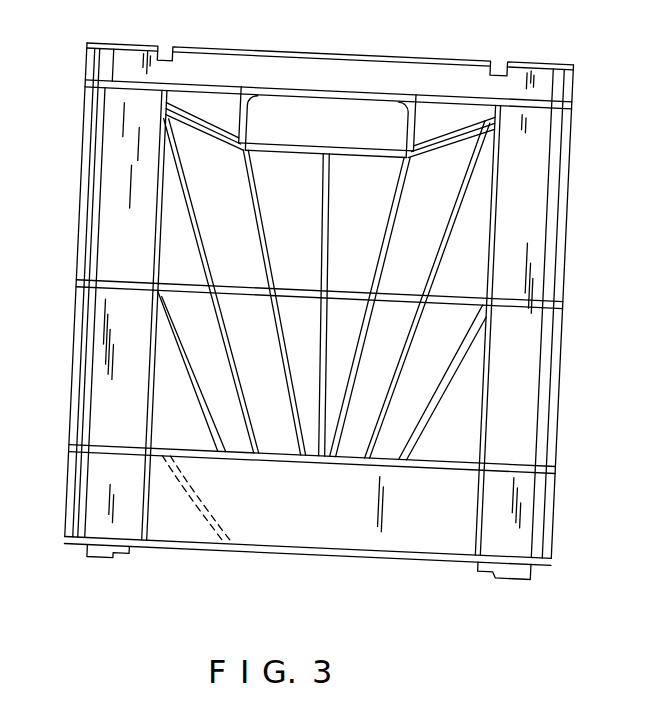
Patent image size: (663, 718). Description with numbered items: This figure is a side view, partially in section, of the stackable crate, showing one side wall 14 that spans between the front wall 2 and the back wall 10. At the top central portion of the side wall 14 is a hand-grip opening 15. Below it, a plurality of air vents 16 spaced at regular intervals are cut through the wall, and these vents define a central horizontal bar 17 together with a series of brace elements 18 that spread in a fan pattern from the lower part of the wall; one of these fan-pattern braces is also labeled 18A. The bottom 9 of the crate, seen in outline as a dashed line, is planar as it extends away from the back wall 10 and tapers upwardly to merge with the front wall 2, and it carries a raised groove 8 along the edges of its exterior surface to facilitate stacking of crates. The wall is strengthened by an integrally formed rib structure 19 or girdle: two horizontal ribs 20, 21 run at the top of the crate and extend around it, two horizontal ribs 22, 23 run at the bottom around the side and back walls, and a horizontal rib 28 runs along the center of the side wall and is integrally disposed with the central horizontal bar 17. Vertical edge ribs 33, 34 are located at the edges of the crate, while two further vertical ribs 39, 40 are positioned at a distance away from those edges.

The front wall 2 is at (80, 247).
The raised groove 8 is at (110, 553).
The bottom 9 is at (212, 503).
The back wall 10 is at (555, 493).
The side wall 14 is at (110, 140).
The hand-grip opening 15 is at (347, 110).
The air vents 16 is at (348, 178).
The central horizontal bar 17 is at (193, 293).
The brace elements 18 is at (472, 200).
The inner diagonal rib 18A is at (460, 210).
The rib structure 19 is at (148, 412).
The horizontal rib 20 is at (145, 53).
The horizontal rib 21 is at (116, 44).
The horizontal rib 22 is at (530, 460).
The horizontal rib 23 is at (95, 538).
The horizontal rib 28 is at (117, 280).
The vertical edge rib 33 is at (95, 66).
The vertical edge rib 34 is at (567, 87).
The vertical rib 39 is at (160, 190).
The vertical rib 40 is at (500, 93).